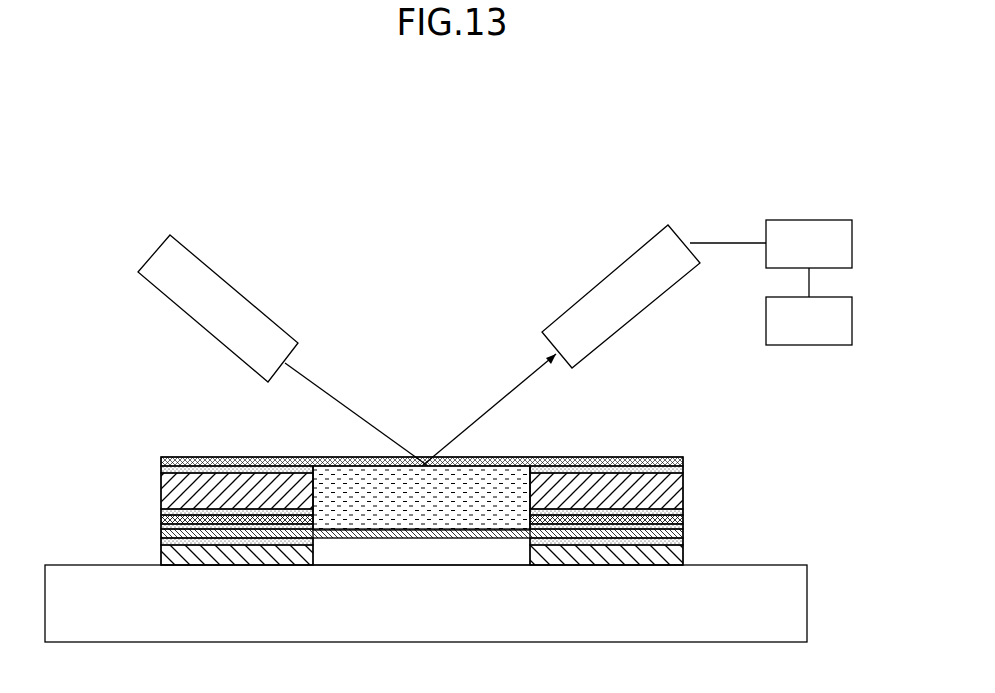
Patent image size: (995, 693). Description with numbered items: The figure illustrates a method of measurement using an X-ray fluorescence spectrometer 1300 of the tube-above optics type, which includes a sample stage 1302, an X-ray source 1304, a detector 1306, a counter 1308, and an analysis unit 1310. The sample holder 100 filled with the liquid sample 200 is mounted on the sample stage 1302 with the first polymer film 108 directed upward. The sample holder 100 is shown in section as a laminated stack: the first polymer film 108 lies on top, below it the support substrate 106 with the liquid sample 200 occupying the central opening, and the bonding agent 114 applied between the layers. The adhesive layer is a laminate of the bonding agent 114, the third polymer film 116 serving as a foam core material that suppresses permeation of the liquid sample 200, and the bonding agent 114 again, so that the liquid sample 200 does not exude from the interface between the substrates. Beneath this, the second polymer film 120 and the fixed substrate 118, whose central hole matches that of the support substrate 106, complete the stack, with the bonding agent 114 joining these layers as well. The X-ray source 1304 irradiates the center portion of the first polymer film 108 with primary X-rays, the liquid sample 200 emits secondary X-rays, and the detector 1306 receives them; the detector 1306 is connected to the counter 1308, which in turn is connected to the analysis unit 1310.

The X-ray fluorescence spectrometer 1300 is at (420, 178).
The sample stage 1302 is at (245, 642).
The X-ray source 1304 is at (230, 283).
The detector 1306 is at (600, 283).
The counter 1308 is at (812, 220).
The analysis unit 1310 is at (810, 345).
The sample holder 100 is at (397, 483).
The liquid sample 200 is at (514, 456).
The support substrate 106 is at (161, 483).
The first polymer film 108 is at (218, 460).
The bonding agent 114 is at (168, 470).
The third polymer film 116 is at (161, 519).
The fixed substrate 118 is at (163, 556).
The second polymer film 120 is at (161, 534).